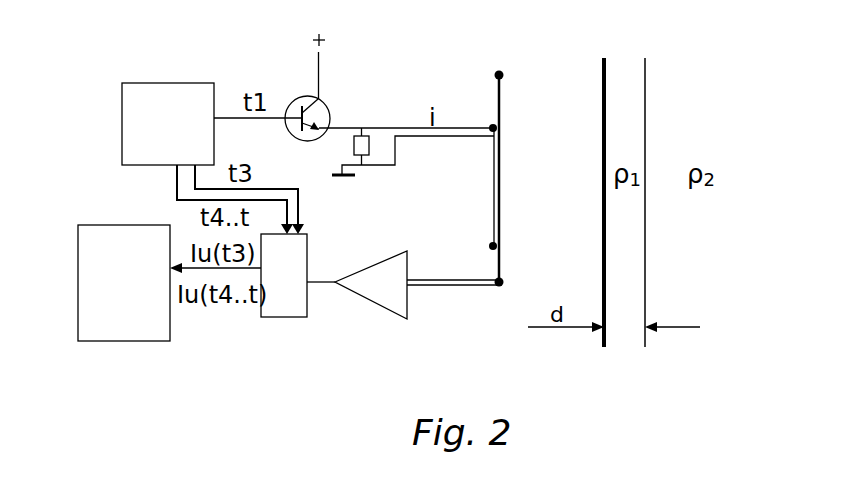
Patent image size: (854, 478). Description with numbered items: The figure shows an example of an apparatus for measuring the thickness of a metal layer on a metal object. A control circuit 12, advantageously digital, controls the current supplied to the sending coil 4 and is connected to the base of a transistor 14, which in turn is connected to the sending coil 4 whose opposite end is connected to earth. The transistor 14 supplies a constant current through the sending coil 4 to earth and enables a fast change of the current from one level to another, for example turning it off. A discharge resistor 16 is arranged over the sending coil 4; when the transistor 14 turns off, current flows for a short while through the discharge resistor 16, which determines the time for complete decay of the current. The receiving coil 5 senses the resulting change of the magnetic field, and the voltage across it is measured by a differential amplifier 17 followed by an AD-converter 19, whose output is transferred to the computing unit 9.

The control circuit 12 is at (170, 97).
The transistor 14 is at (305, 102).
The discharge resistor 16 is at (361, 145).
The sending coil 4 is at (494, 190).
The receiving coil 5 is at (502, 181).
The computing unit 9 is at (135, 325).
The AD-converter 19 is at (291, 310).
The differential amplifier 17 is at (390, 300).